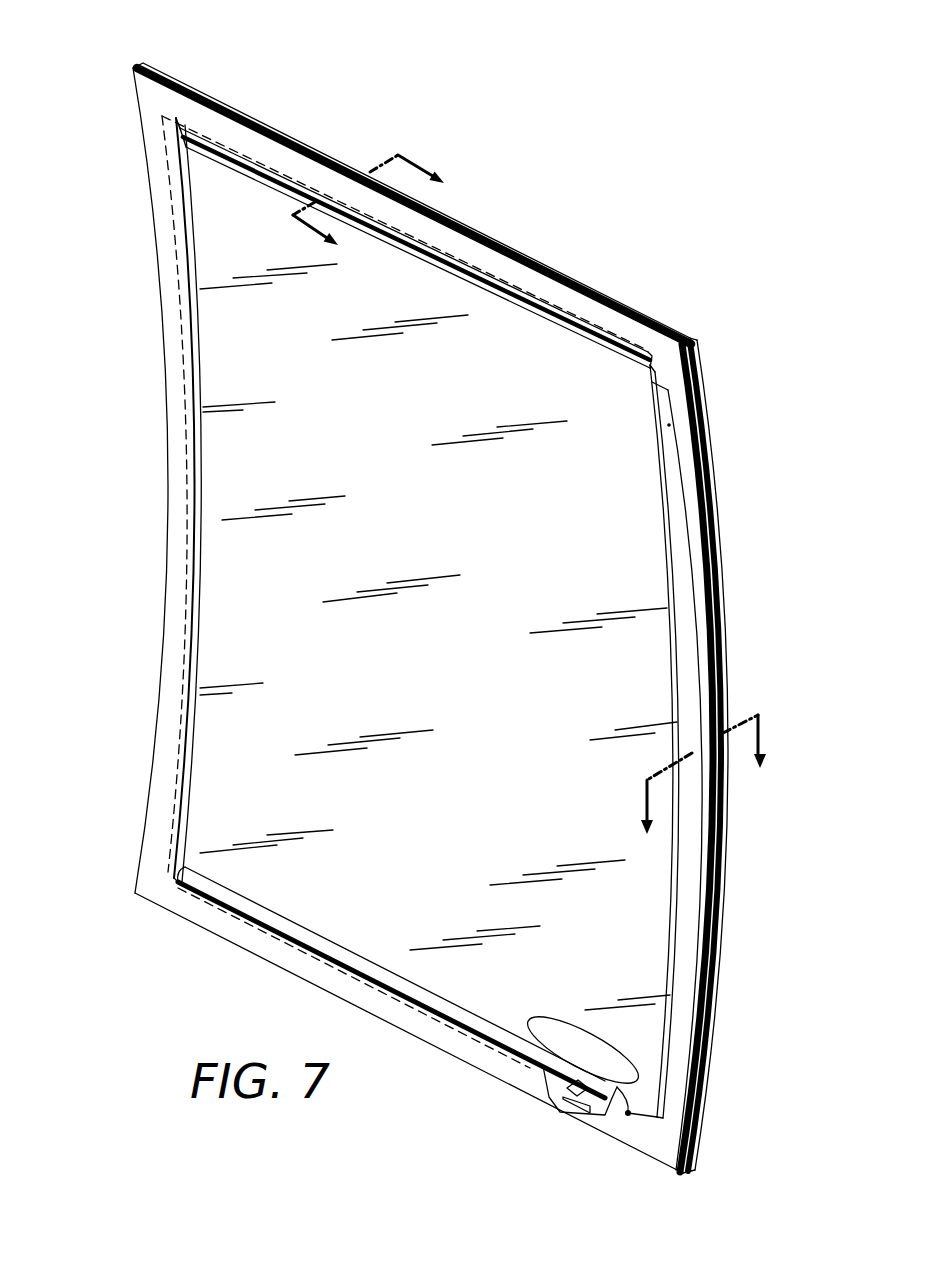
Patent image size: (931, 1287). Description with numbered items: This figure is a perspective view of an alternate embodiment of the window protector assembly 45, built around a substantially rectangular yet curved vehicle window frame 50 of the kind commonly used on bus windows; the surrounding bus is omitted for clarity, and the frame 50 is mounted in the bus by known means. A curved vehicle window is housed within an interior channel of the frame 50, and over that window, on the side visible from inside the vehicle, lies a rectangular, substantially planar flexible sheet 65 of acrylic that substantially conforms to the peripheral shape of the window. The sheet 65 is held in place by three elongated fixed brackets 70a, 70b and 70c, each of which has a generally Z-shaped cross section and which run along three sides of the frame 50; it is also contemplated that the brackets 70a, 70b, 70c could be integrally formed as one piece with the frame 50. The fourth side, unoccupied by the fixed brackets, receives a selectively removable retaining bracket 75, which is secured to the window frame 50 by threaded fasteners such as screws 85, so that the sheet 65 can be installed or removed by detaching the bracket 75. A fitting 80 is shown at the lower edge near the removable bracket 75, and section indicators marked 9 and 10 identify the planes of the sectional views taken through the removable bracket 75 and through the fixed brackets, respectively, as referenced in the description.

The window protector assembly 45 is at (744, 357).
The vehicle window frame 50 is at (615, 298).
The flexible sheet 65 is at (592, 497).
The removable retaining bracket 75 is at (682, 672).
The fixed bracket 70a is at (197, 658).
The fixed bracket 70b is at (189, 138).
The fixed bracket 70c is at (243, 905).
The clamp 80 is at (566, 1050).
The screws 85 is at (670, 1077).
The section line 10- 10 is at (391, 215).
The section line 9- 9 is at (705, 795).